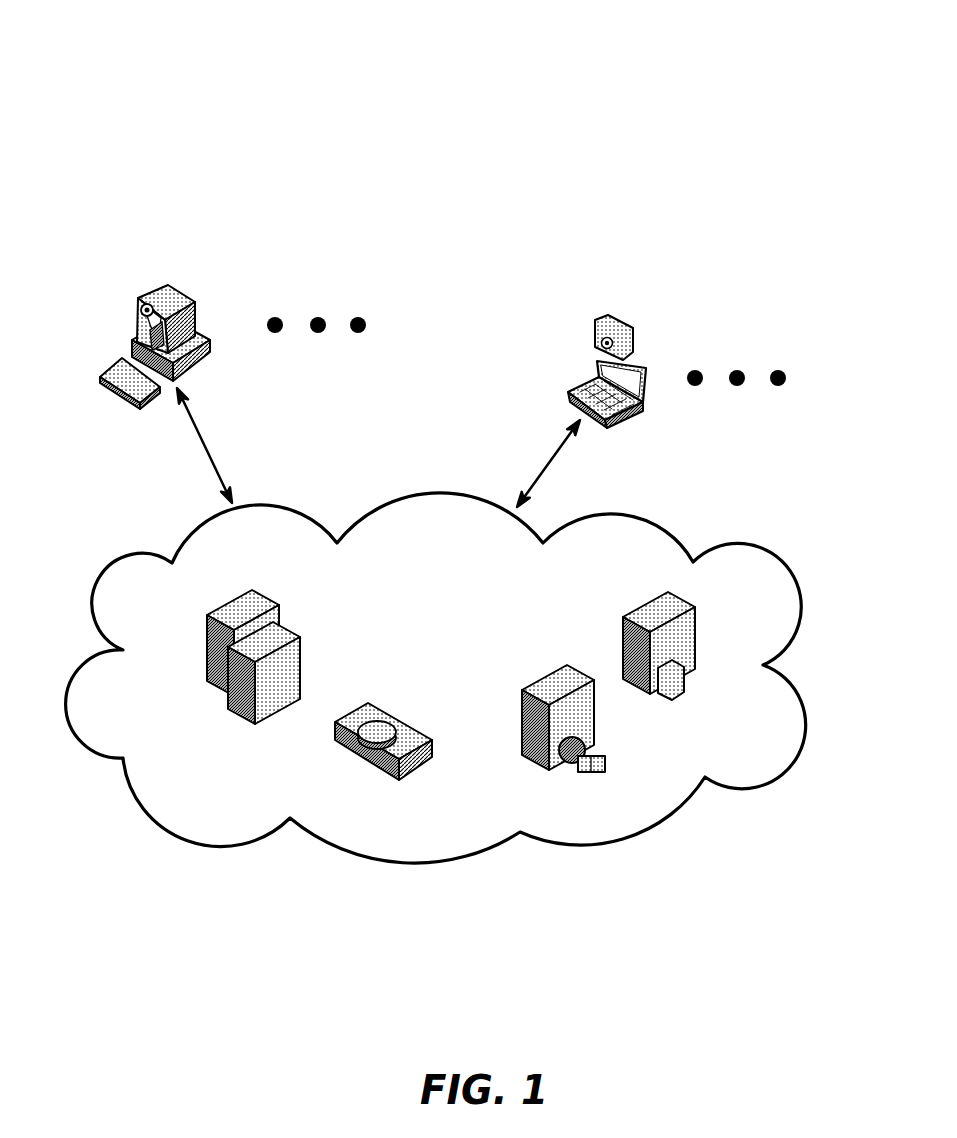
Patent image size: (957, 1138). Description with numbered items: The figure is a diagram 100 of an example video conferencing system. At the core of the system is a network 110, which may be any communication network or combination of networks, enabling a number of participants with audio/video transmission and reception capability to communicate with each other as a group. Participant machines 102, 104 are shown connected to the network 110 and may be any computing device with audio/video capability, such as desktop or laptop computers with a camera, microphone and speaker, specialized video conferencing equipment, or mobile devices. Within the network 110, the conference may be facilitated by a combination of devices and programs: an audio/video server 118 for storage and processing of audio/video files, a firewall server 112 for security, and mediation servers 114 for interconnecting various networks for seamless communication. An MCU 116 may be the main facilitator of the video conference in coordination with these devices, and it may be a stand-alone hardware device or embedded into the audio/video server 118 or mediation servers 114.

The diagram 100 is at (716, 85).
The participant machine 102 is at (159, 274).
The participant machine 104 is at (599, 297).
The network 110 is at (144, 552).
The firewall server 112 is at (654, 581).
The mediation servers 114 is at (216, 599).
The MCU 116 is at (339, 749).
The audio/video server 118 is at (561, 654).